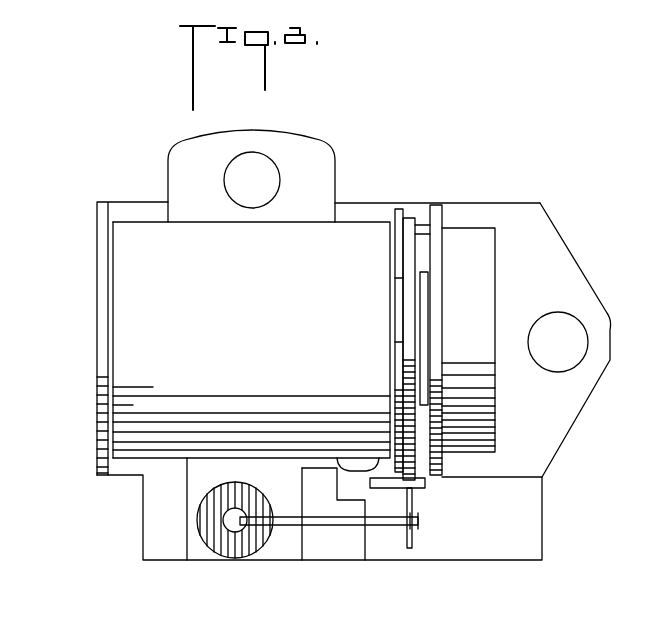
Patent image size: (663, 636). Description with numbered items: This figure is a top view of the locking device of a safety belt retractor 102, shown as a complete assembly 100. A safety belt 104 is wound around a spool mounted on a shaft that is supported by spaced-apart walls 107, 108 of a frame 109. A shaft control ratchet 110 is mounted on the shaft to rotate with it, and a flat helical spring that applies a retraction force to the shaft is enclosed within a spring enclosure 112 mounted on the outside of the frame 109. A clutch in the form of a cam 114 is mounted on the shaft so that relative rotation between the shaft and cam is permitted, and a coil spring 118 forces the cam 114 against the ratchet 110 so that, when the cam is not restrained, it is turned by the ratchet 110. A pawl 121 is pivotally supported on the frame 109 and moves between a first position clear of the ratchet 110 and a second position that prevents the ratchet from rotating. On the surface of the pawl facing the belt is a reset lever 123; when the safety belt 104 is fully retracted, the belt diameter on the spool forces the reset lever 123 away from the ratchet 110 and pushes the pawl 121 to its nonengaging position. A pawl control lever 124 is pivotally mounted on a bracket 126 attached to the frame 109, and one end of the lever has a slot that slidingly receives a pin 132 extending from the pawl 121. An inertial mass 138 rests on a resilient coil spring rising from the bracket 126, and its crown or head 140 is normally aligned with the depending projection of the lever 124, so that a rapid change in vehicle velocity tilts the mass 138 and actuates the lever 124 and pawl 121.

The solenoid assembly 100 is at (143, 148).
The safety belt retractor 102 is at (90, 290).
The safety belt 104 is at (135, 238).
The frame wall 107 is at (438, 204).
The frame wall 108 is at (102, 248).
The frame 109 is at (548, 532).
The shaft control ratchet 110 is at (399, 208).
The spring enclosure 112 is at (474, 240).
The cam 114 is at (410, 216).
The coil spring 118 is at (424, 264).
The pawl 121 is at (426, 484).
The reset lever 123 is at (352, 472).
The pawl control lever 124 is at (283, 517).
The bracket 126 is at (318, 553).
The pin 132 is at (412, 541).
The inertial mass 138 is at (212, 559).
The crown or head 140 is at (226, 509).